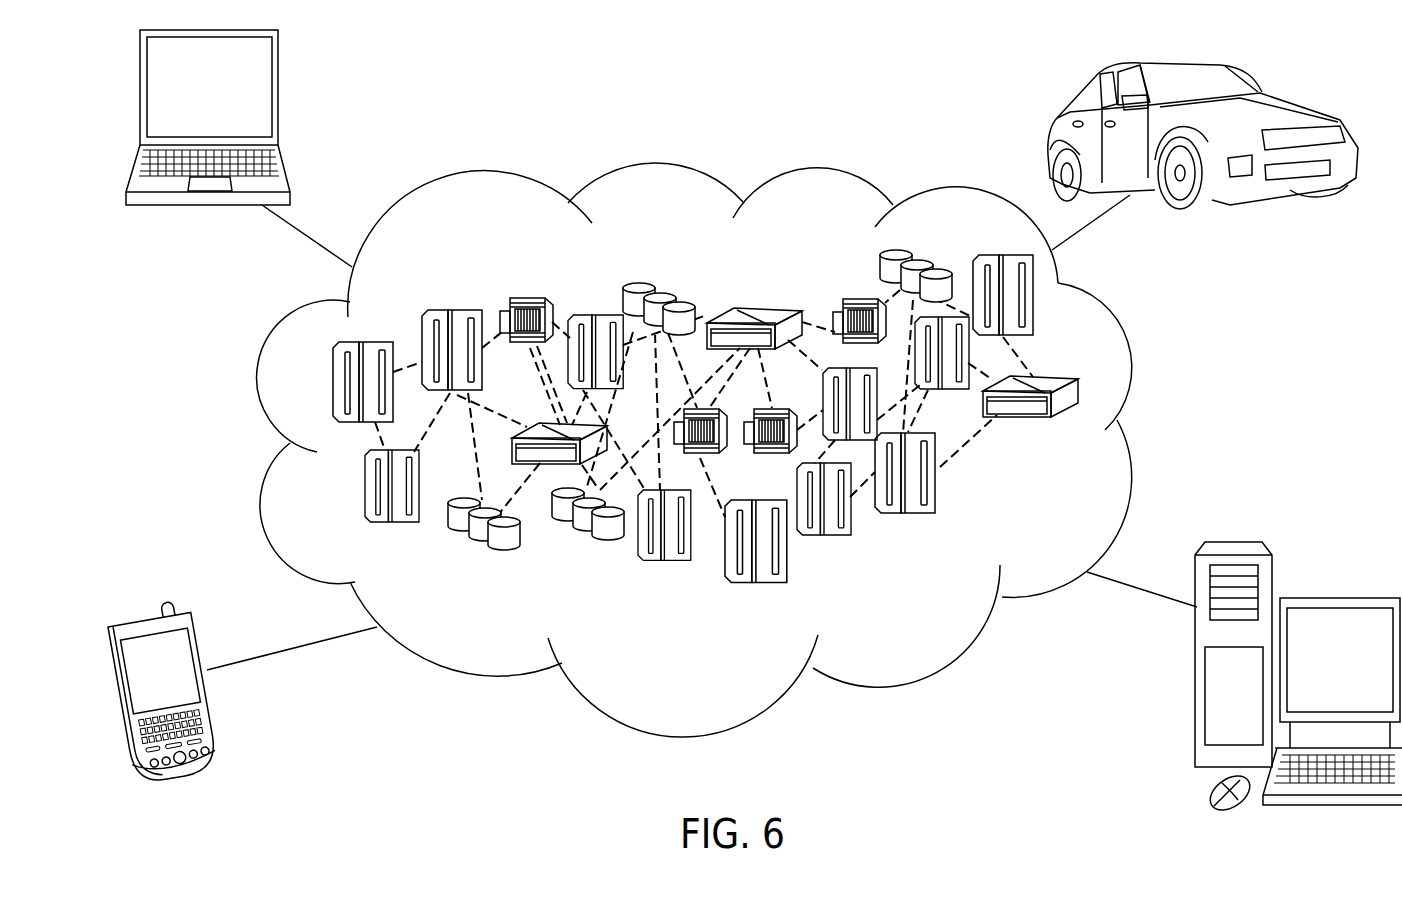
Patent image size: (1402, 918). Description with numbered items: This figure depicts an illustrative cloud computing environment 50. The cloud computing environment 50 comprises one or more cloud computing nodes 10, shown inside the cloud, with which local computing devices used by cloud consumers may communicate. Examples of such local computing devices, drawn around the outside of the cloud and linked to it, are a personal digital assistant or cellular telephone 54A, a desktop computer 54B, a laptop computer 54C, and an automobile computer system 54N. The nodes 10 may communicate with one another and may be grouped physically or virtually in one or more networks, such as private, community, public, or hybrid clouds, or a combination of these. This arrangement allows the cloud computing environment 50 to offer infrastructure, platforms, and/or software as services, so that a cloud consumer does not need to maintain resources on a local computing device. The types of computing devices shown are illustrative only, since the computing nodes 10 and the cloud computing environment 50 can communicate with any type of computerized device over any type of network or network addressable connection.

The cloud computing nodes 10 is at (1116, 444).
The cloud computing environment 50 is at (1130, 367).
The personal digital assistant or cellular telephone 54A is at (114, 700).
The desktop computer 54B is at (1318, 599).
The laptop computer 54C is at (140, 92).
The automobile computer system 54N is at (1258, 87).